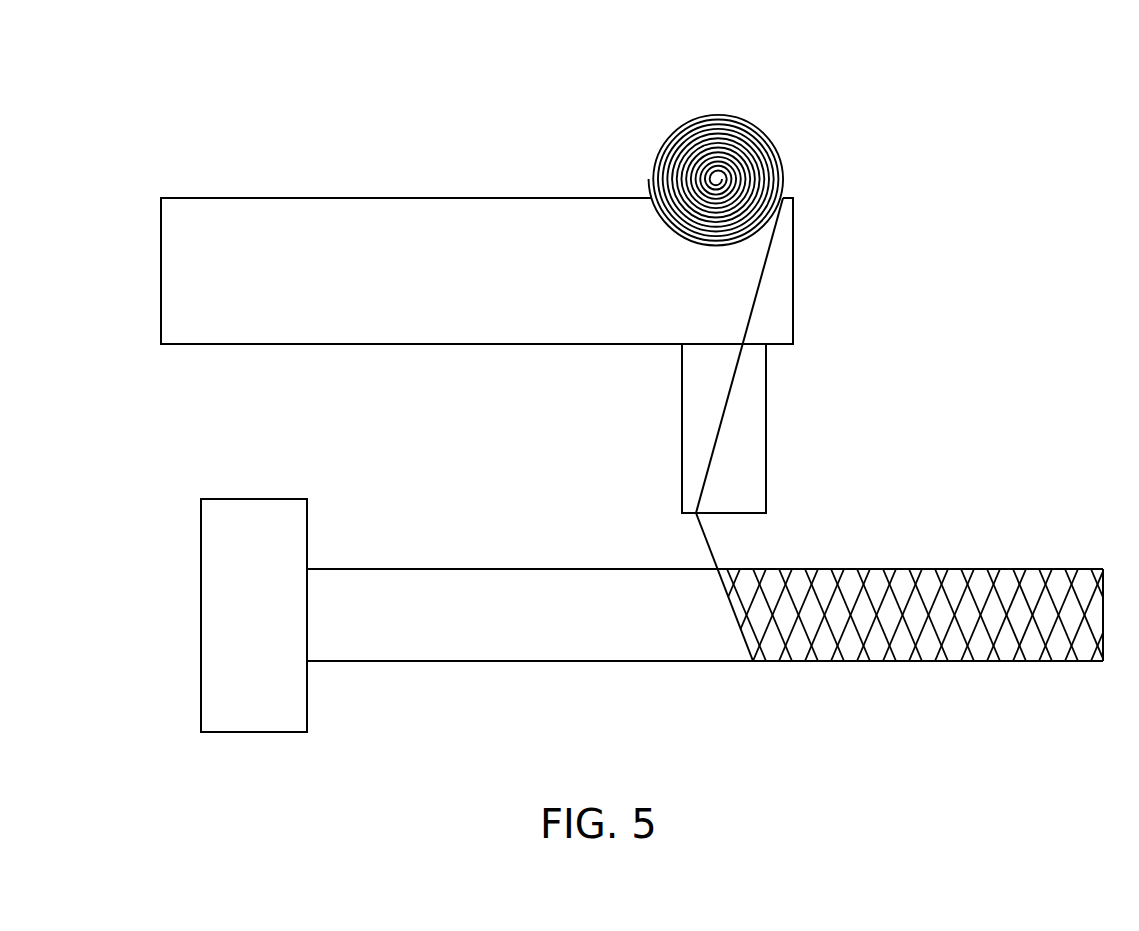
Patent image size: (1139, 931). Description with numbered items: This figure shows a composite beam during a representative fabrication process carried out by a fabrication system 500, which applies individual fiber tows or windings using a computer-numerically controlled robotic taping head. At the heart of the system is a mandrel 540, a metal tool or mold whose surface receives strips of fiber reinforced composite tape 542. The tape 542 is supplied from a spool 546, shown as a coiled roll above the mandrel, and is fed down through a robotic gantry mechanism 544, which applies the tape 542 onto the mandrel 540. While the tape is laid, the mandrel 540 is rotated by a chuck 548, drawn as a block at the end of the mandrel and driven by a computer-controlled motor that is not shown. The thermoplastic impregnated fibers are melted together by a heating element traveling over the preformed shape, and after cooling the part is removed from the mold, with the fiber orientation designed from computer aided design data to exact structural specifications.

The fabrication system 500 is at (248, 109).
The mandrel 540 is at (563, 652).
The fiber reinforced composite tape 542 is at (702, 543).
The robotic gantry mechanism 544 is at (723, 417).
The spool 546 is at (718, 110).
The chuck 548 is at (218, 624).